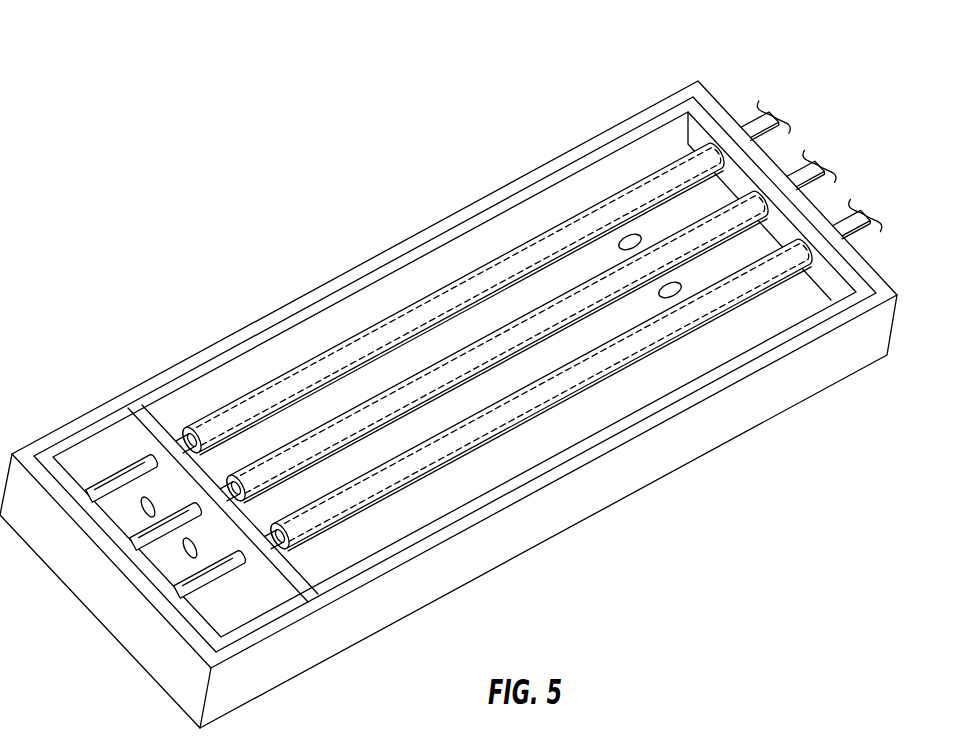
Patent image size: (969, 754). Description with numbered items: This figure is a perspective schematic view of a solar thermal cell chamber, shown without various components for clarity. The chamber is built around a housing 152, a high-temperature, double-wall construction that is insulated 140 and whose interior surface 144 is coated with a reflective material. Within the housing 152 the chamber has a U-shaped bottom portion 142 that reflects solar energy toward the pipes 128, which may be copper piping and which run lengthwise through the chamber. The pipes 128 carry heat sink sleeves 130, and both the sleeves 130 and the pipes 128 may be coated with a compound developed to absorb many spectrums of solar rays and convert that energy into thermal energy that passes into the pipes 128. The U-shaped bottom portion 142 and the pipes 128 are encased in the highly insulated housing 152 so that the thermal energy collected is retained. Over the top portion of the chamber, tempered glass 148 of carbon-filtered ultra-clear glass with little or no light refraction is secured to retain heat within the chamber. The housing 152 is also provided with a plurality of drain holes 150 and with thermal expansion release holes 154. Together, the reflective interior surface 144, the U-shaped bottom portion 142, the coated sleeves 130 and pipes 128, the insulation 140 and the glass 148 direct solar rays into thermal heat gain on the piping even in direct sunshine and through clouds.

The pipes 128 is at (647, 461).
The heat sink sleeves 130 is at (763, 292).
The insulation 140 is at (415, 553).
The U-shaped bottom portion 142 is at (258, 600).
The interior surface 144 is at (389, 294).
The tempered glass 148 is at (803, 296).
The drain holes 150 is at (670, 284).
The housing 152 is at (180, 686).
The thermal expansion release holes 154 is at (185, 550).